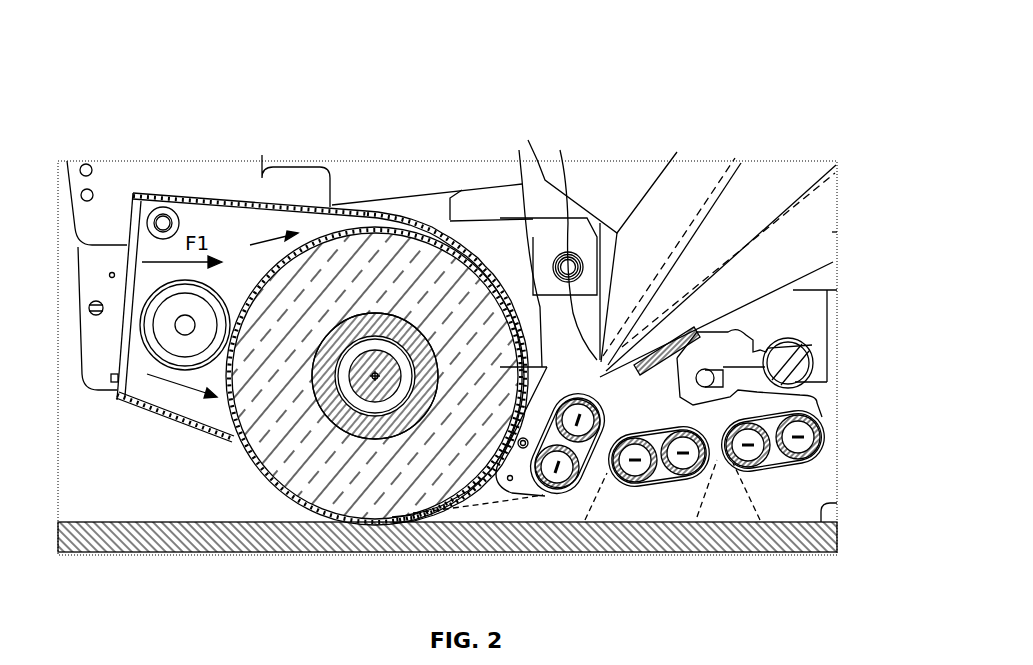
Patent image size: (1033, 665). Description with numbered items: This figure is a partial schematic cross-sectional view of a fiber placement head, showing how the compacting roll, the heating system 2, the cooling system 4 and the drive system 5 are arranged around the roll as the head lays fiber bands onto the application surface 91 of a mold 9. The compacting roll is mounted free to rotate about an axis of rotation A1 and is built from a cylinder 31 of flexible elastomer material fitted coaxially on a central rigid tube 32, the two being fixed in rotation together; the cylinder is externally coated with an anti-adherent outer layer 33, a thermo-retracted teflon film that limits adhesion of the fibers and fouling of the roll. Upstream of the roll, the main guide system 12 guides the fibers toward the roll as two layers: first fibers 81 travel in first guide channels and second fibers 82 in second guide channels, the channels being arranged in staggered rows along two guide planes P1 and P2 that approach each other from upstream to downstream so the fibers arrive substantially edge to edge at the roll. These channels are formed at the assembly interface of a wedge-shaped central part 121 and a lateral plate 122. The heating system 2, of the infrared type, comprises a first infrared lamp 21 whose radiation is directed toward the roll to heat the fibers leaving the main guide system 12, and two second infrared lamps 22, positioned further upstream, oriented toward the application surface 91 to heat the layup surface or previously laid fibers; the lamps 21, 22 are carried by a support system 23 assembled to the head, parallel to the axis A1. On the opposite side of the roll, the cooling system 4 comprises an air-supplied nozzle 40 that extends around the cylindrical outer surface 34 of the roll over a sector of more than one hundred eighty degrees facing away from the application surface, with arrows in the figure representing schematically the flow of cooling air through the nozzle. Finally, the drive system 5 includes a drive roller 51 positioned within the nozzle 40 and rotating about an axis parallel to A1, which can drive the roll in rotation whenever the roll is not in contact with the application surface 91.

The heating system 2 is at (842, 364).
The cooling system 4 is at (124, 415).
The drive system 5 is at (153, 162).
The mold 9 is at (840, 545).
The main guide system 12 is at (688, 175).
The first infrared lamp 21 is at (552, 490).
The second infrared lamps 22 is at (652, 487).
The support system 23 is at (830, 335).
The cylinder 31 is at (410, 500).
The central tube 32 is at (362, 439).
The anti-adherent outer layer 33 is at (310, 503).
The cylindrical outer surface 34 is at (272, 482).
The nozzle 40 is at (153, 410).
The drive roller 51 is at (193, 357).
The first fibers 81 is at (567, 175).
The second fibers 82 is at (519, 172).
The application surface 91 is at (832, 510).
The central part 121 is at (783, 165).
The lateral plate 122 is at (663, 198).
The axis of rotation A1 is at (372, 377).
The first guide plane P1 is at (732, 172).
The second guide plane P2 is at (826, 168).